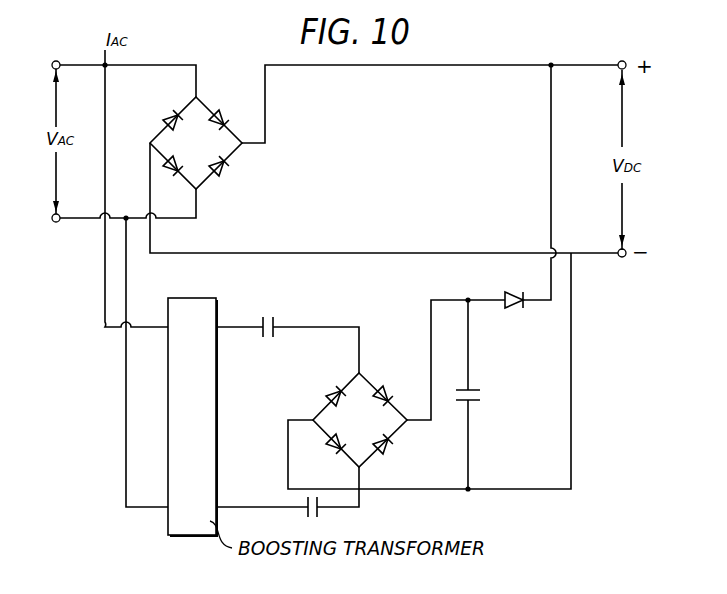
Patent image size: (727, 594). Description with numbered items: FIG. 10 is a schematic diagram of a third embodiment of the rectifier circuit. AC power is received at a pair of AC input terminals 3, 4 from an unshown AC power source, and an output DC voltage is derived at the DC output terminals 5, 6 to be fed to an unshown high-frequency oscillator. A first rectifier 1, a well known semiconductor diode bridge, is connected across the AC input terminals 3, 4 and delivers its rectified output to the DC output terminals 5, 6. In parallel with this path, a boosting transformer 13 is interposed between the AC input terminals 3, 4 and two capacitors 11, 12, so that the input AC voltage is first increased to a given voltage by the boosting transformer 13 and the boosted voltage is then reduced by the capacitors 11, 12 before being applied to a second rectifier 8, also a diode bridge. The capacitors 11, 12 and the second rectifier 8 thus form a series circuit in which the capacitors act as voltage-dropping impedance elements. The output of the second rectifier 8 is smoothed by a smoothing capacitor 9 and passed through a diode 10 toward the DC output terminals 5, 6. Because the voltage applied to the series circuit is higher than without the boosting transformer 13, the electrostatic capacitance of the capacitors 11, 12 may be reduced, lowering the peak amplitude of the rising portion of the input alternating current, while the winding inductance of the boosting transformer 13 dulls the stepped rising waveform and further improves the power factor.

The first rectifier 1 is at (201, 153).
The AC input terminal 3 is at (57, 61).
The AC input terminal 4 is at (57, 222).
The DC output terminal 5 is at (623, 61).
The DC output terminal 6 is at (619, 257).
The second rectifier 8 is at (366, 431).
The smoothing capacitor 9 is at (466, 401).
The diode 10 is at (513, 307).
The capacitor 11 is at (274, 317).
The capacitor 12 is at (307, 499).
The boosting transformer 13 is at (205, 298).